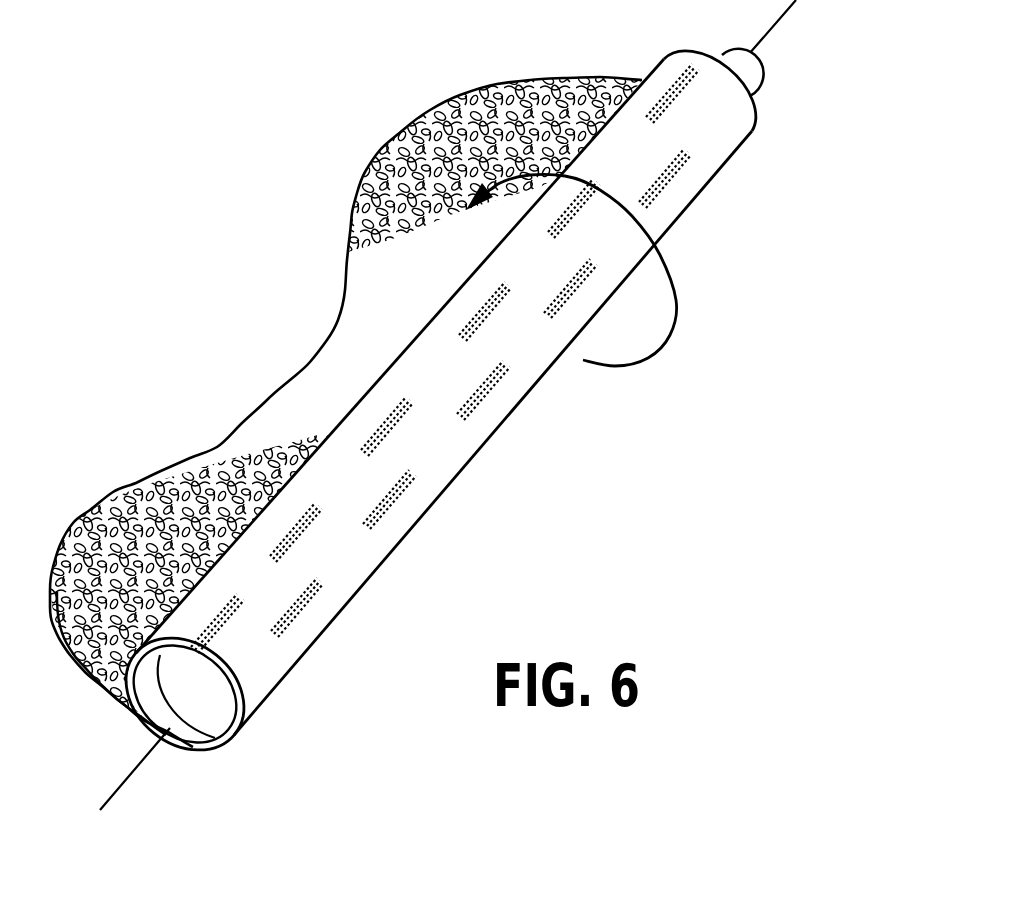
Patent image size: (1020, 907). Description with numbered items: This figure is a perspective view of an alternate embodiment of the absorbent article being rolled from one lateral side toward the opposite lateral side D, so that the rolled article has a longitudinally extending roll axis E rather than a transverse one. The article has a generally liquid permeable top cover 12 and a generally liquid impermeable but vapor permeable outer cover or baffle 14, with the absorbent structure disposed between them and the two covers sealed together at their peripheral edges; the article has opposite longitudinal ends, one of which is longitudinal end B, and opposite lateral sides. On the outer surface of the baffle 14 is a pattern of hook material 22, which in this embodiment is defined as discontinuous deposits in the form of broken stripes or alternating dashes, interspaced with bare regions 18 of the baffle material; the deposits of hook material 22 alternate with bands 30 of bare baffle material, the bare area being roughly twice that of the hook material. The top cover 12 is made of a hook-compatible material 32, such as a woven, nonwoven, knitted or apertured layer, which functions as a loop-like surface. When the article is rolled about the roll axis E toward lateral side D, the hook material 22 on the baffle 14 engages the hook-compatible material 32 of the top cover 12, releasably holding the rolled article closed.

The top cover 12 is at (532, 80).
The baffle 14 is at (487, 253).
The bare regions 18 is at (343, 553).
The hook material 22 is at (688, 163).
The bands of bare baffle material 30 is at (443, 448).
The hook-compatible material 32 is at (158, 481).
The longitudinal end B is at (104, 703).
The lateral side D is at (338, 307).
The roll axis E is at (130, 772).